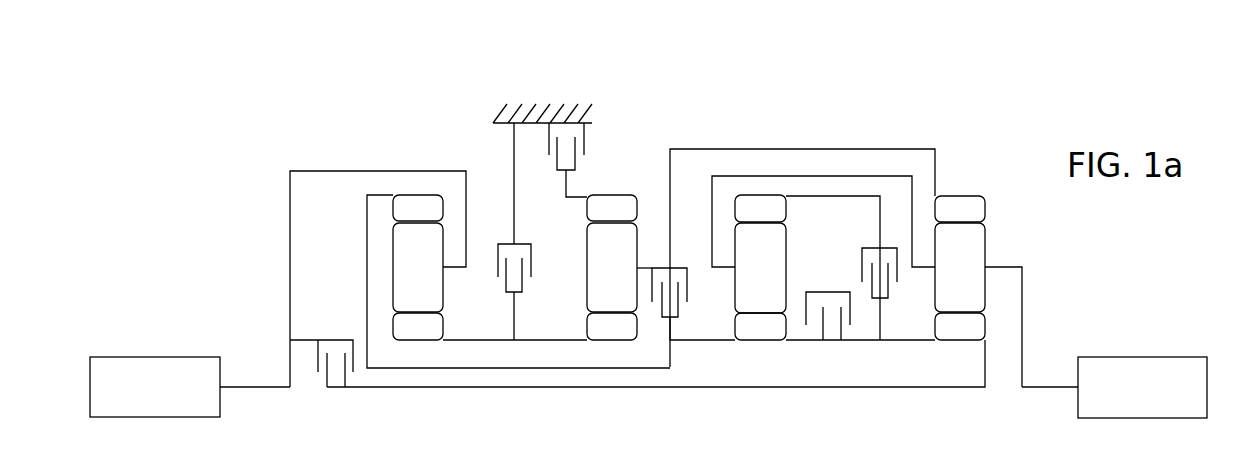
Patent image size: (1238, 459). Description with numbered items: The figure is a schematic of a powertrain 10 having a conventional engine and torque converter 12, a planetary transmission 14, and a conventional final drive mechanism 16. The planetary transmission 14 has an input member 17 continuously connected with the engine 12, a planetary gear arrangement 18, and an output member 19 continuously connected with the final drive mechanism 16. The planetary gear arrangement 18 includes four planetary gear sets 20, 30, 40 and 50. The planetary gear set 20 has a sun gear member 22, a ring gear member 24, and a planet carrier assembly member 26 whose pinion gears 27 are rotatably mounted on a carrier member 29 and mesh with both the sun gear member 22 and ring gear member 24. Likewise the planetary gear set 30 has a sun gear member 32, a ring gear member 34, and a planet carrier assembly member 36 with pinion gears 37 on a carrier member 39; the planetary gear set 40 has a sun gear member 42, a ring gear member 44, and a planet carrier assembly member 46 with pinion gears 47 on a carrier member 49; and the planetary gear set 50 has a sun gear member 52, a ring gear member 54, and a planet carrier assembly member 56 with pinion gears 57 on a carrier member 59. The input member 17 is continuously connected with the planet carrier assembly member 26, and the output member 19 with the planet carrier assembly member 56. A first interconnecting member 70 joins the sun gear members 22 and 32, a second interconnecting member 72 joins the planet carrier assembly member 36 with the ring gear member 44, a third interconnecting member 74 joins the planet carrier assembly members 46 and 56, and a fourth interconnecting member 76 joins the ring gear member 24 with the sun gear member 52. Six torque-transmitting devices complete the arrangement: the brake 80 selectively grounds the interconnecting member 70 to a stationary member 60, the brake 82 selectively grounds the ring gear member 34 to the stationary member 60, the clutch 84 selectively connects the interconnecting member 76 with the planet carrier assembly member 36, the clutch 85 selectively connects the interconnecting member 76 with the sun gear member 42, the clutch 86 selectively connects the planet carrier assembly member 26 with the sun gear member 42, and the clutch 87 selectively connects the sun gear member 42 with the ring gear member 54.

The powertrain 10 is at (422, 90).
The engine and torque converter 12 is at (142, 338).
The planetary transmission 14 is at (700, 95).
The final drive mechanism 16 is at (1158, 340).
The input member 17 is at (252, 388).
The planetary gear arrangement 18 is at (815, 90).
The output member 19 is at (1040, 388).
The planetary gear set 20 is at (433, 310).
The sun gear member 22 is at (416, 352).
The ring gear member 24 is at (418, 208).
The planet carrier assembly member 26 is at (450, 282).
The pinion gears 27 is at (418, 267).
The carrier member 29 is at (462, 270).
The planetary gear set 30 is at (612, 229).
The sun gear member 32 is at (612, 326).
The ring gear member 34 is at (612, 208).
The planet carrier assembly member 36 is at (645, 260).
The pinion gears 37 is at (612, 267).
The carrier member 39 is at (650, 266).
The planetary gear set 40 is at (960, 230).
The sun gear member 42 is at (960, 326).
The ring gear member 44 is at (960, 209).
The planet carrier assembly member 46 is at (993, 257).
The pinion gears 47 is at (960, 267).
The carrier member 49 is at (1005, 265).
The planetary gear set 50 is at (776, 310).
The sun gear member 52 is at (760, 352).
The ring gear member 54 is at (760, 208).
The planet carrier assembly member 56 is at (728, 284).
The pinion gears 57 is at (760, 268).
The carrier member 59 is at (677, 300).
The stationary member 60 is at (533, 105).
The first interconnecting member 70 is at (558, 342).
The second interconnecting member 72 is at (784, 149).
The third interconnecting member 74 is at (870, 176).
The fourth interconnecting member 76 is at (367, 276).
The brake 80 is at (544, 264).
The brake 82 is at (547, 147).
The clutch 84 is at (678, 330).
The clutch 85 is at (833, 283).
The clutch 86 is at (306, 365).
The clutch 87 is at (853, 252).